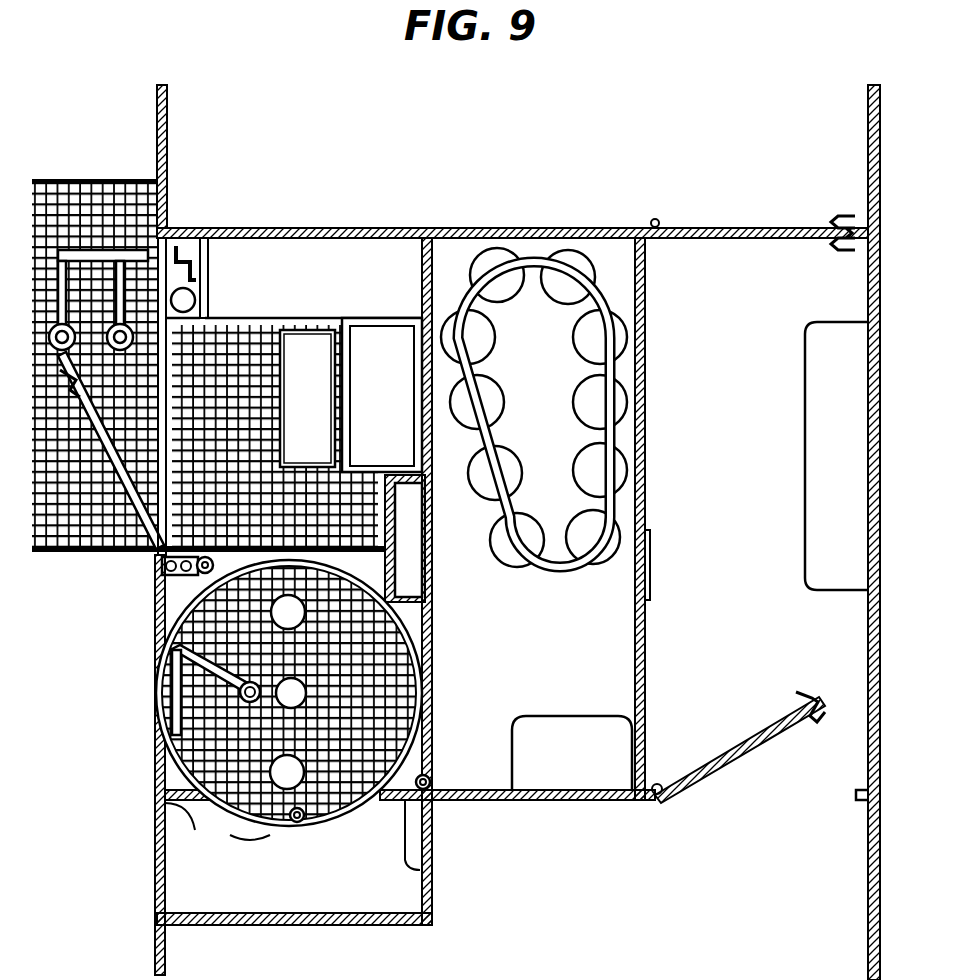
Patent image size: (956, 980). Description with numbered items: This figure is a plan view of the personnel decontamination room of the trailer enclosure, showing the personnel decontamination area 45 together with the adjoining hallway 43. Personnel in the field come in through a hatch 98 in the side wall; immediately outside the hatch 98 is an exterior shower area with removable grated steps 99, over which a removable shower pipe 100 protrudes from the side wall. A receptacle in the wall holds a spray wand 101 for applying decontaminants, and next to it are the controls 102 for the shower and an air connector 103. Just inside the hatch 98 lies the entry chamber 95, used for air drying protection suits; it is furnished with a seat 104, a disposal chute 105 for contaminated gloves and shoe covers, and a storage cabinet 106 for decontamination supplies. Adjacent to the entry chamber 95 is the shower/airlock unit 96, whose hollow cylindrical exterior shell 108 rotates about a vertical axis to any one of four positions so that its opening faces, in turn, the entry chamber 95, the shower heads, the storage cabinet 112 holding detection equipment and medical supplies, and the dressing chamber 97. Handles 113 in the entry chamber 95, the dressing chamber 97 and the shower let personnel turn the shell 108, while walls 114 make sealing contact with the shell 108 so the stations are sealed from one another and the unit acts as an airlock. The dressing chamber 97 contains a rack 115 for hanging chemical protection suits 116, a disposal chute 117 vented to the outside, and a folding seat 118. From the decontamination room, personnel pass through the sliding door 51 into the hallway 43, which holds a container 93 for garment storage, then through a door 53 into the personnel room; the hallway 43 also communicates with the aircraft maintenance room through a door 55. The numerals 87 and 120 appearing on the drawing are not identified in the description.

The hallway 43 is at (750, 260).
The personnel decontamination area 45 is at (452, 248).
The sliding door 51 is at (650, 695).
The door 53 is at (727, 770).
The door 55 is at (676, 225).
The latch 87 is at (796, 885).
The container 93 is at (800, 400).
The entry chamber 95 is at (268, 385).
The shower/airlock unit 96 is at (185, 735).
The dressing chamber 97 is at (498, 770).
The hatch 98 is at (85, 548).
The grated steps 99 is at (97, 195).
The shower pipe 100 is at (217, 345).
The spray wand 101 is at (183, 245).
The controls 102 is at (138, 232).
The air connector 103 is at (163, 563).
The seat 104 is at (391, 333).
The disposal chute 105 is at (317, 343).
The storage cabinet 106 is at (257, 248).
The hollow cylindrical exterior shell 108 is at (250, 825).
The storage cabinet 112 is at (176, 872).
The handles 113 is at (178, 600).
The walls 114 is at (420, 598).
The rack 115 is at (556, 570).
The chemical protection suits 116 is at (645, 550).
The disposal chute 117 is at (417, 580).
The folding seat 118 is at (592, 770).
The bracket 120 is at (200, 262).